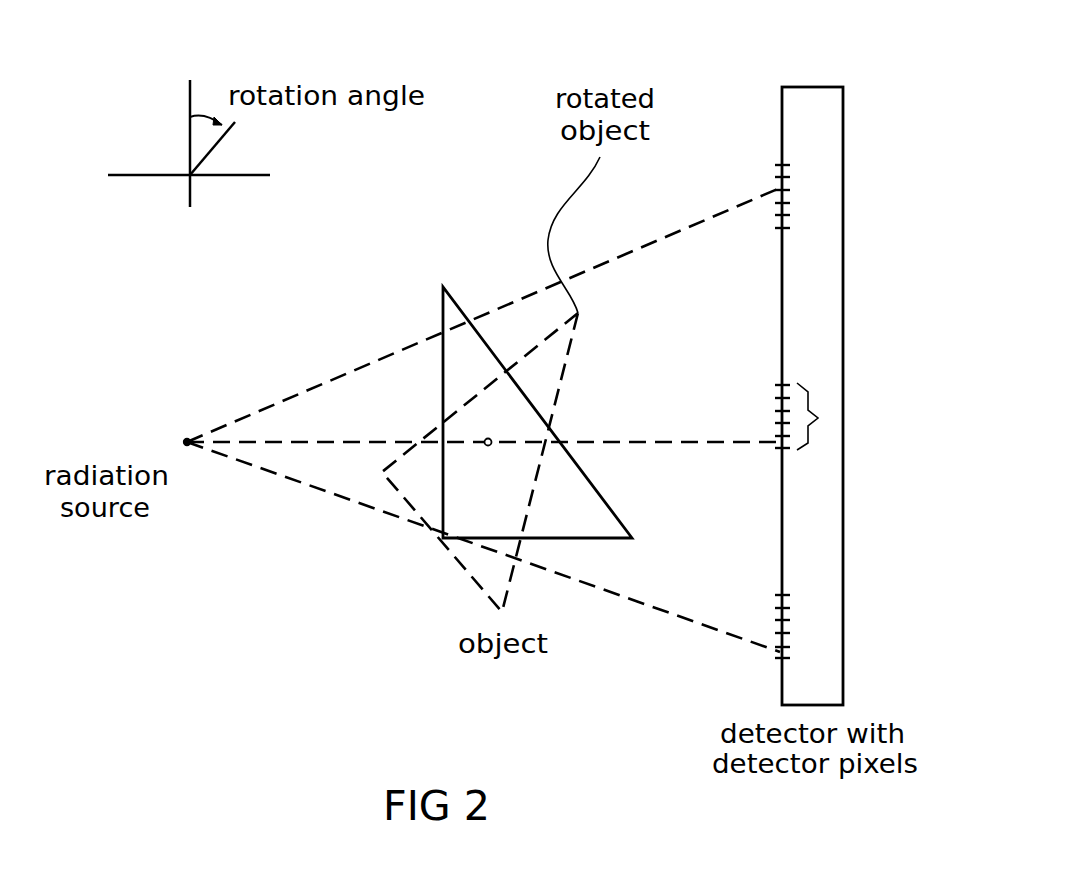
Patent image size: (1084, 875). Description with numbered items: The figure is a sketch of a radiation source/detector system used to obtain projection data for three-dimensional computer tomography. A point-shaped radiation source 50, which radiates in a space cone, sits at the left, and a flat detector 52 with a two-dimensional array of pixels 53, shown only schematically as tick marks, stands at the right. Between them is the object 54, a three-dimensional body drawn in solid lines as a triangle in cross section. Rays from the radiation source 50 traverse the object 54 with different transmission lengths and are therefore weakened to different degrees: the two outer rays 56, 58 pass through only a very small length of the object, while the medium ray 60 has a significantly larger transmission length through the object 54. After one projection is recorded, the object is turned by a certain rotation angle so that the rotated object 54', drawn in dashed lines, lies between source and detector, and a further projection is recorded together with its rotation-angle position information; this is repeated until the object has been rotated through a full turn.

The radiation source 50 is at (190, 435).
The detector 52 is at (843, 537).
The pixels 53 is at (825, 416).
The object 54 is at (530, 370).
The rotated object 54' is at (530, 450).
The ray 56 is at (305, 388).
The ray 58 is at (320, 488).
The medium ray 60 is at (590, 440).